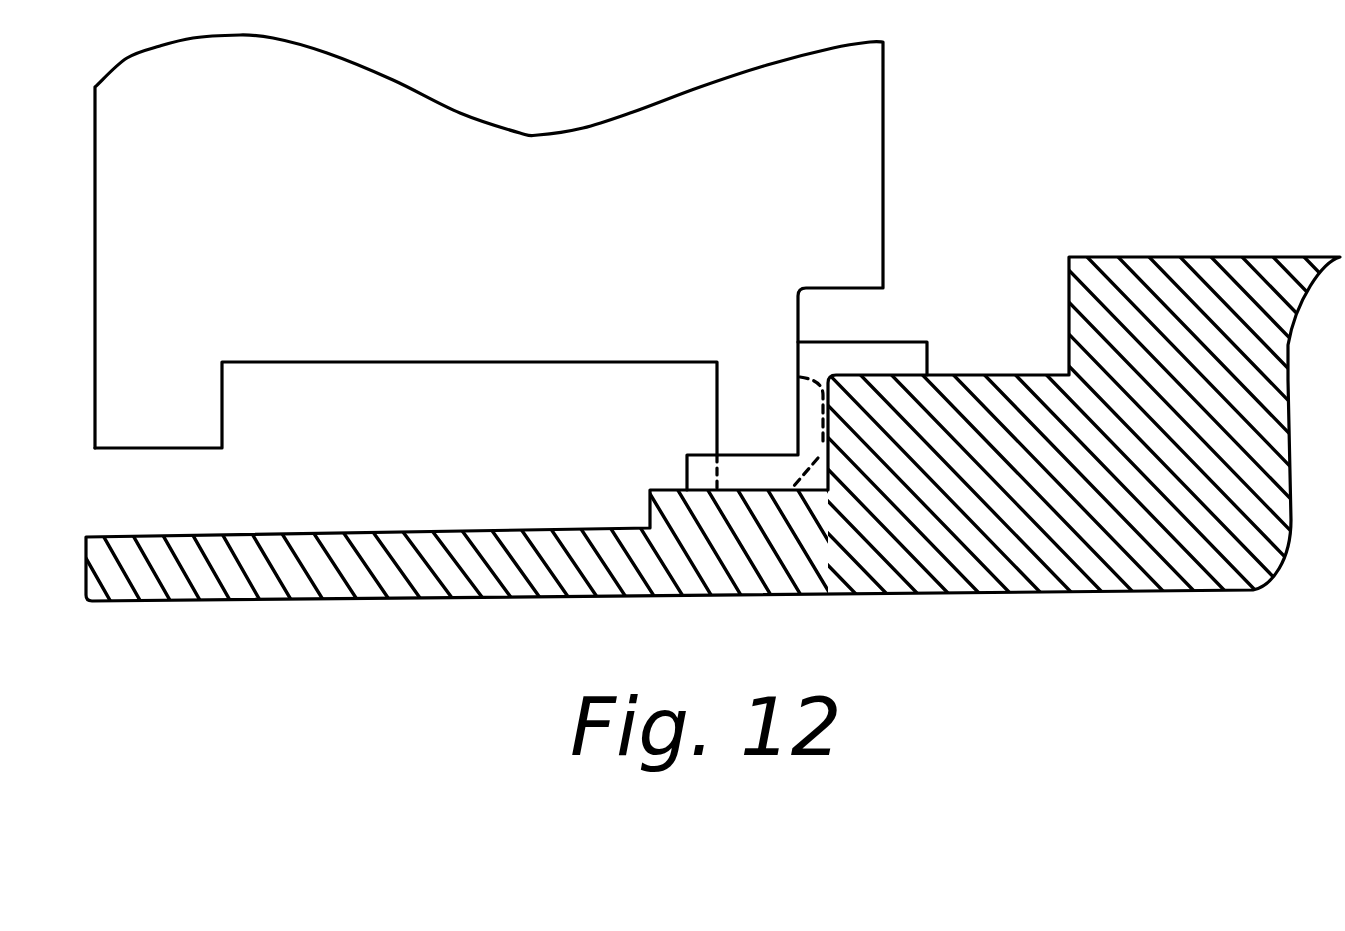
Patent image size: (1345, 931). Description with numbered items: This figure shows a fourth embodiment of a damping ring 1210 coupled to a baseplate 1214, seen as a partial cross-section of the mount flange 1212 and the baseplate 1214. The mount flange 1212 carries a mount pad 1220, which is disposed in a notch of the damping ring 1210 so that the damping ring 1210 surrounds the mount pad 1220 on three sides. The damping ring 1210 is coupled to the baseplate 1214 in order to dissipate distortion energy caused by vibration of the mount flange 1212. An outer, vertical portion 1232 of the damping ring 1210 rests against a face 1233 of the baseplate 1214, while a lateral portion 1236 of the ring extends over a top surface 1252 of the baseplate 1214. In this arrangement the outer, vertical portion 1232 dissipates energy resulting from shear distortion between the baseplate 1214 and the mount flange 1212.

The mount flange 1212 is at (890, 125).
The baseplate 1214 is at (1158, 252).
The damping ring 1210 is at (872, 330).
The lateral portion 1236 is at (903, 350).
The top surface 1252 is at (958, 372).
The mount pad 1220 is at (718, 404).
The outer, vertical portion 1232 is at (803, 416).
The face 1233 is at (833, 428).